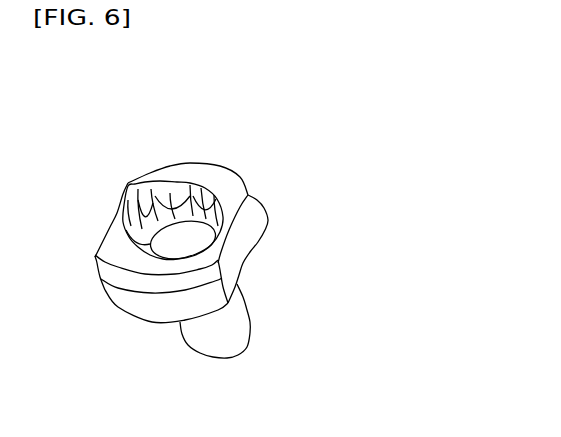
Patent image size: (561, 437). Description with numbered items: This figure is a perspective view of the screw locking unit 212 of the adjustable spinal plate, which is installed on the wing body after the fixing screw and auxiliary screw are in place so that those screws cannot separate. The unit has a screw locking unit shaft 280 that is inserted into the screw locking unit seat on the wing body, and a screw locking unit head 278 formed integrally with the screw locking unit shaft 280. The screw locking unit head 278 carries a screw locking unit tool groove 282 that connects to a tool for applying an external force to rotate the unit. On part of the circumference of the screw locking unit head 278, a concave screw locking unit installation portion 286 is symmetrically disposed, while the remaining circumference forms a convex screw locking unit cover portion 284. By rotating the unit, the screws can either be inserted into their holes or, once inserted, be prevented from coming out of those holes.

The screw locking unit 212 is at (197, 128).
The screw locking unit head 278 is at (147, 265).
The screw locking unit shaft 280 is at (222, 343).
The screw locking unit tool groove 282 is at (144, 218).
The screw locking unit cover portion 284 is at (185, 303).
The screw locking unit installation portion 286 is at (245, 223).